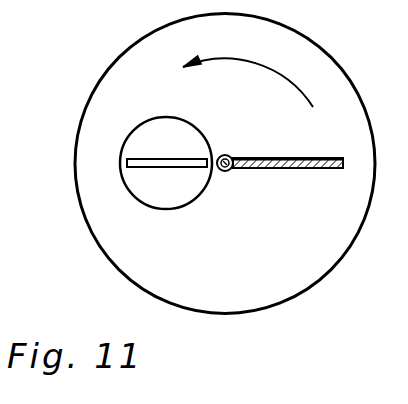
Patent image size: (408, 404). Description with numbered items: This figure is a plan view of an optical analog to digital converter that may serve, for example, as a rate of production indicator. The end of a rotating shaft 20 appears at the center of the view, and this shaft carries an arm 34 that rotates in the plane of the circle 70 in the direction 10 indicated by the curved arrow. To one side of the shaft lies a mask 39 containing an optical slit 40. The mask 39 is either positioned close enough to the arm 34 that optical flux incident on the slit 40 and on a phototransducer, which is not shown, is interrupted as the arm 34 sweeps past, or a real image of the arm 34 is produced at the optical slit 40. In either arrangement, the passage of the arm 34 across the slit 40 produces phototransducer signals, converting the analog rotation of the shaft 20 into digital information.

The direction 10 is at (268, 67).
The rotating shaft 20 is at (228, 172).
The arm 34 is at (308, 169).
The mask 39 is at (147, 123).
The optical slit 40 is at (155, 166).
The circle 70 is at (122, 52).